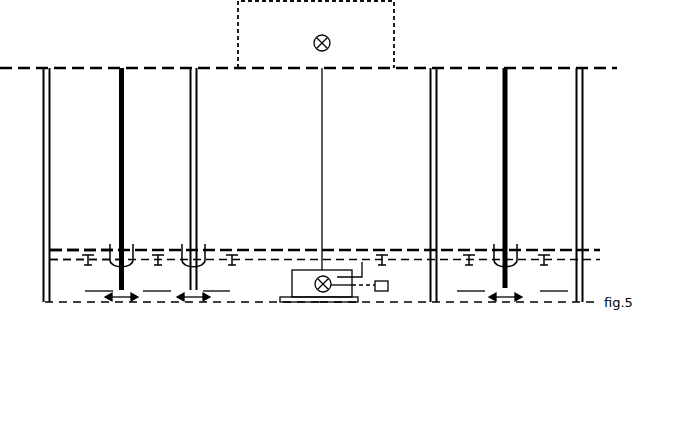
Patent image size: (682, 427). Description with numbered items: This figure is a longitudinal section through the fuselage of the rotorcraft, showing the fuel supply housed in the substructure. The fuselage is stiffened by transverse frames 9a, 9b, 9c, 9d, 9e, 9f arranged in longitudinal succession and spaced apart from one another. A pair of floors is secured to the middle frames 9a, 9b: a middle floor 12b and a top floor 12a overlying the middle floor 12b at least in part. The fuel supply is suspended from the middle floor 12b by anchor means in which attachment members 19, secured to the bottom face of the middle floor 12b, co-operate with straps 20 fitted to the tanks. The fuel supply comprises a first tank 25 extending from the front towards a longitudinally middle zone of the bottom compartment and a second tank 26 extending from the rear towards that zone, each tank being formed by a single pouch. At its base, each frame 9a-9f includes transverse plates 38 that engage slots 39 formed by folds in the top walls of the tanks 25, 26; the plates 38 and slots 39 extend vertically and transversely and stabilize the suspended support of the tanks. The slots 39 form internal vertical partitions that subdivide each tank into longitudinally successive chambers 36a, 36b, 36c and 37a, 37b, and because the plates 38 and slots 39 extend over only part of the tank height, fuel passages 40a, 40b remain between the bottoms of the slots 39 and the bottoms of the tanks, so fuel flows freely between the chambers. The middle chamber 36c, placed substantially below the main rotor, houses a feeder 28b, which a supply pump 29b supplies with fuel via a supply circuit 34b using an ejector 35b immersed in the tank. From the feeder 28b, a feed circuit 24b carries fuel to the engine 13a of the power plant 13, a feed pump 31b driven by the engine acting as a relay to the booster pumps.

The transverse frame 9a is at (198, 153).
The transverse frame 9b is at (438, 160).
The transverse frame 9c is at (51, 149).
The transverse frame 9d is at (126, 149).
The transverse frame 9e is at (509, 155).
The transverse frame 9f is at (585, 153).
The top floor 12a is at (209, 67).
The middle floor 12b is at (566, 247).
The power plant 13 is at (412, 41).
The engine 13a is at (316, 34).
The feed pump 31b is at (329, 38).
The feed circuit 24b is at (323, 163).
The attachment member 19 is at (81, 250).
The strap 20 is at (86, 262).
The first tank 25 is at (235, 302).
The second tank 26 is at (482, 304).
The feeder 28b is at (305, 270).
The supply pump 29b is at (313, 289).
The supply circuit 34b is at (362, 262).
The ejector 35b is at (384, 296).
The chamber 36a is at (99, 283).
The chamber 36b is at (157, 283).
The middle chamber 36c is at (216, 283).
The chamber 37a is at (554, 283).
The chamber 37b is at (471, 283).
The transverse plate 38 is at (111, 250).
The slot 39 is at (133, 252).
The fuel passage 40a is at (157, 298).
The fuel passage 40b is at (520, 298).